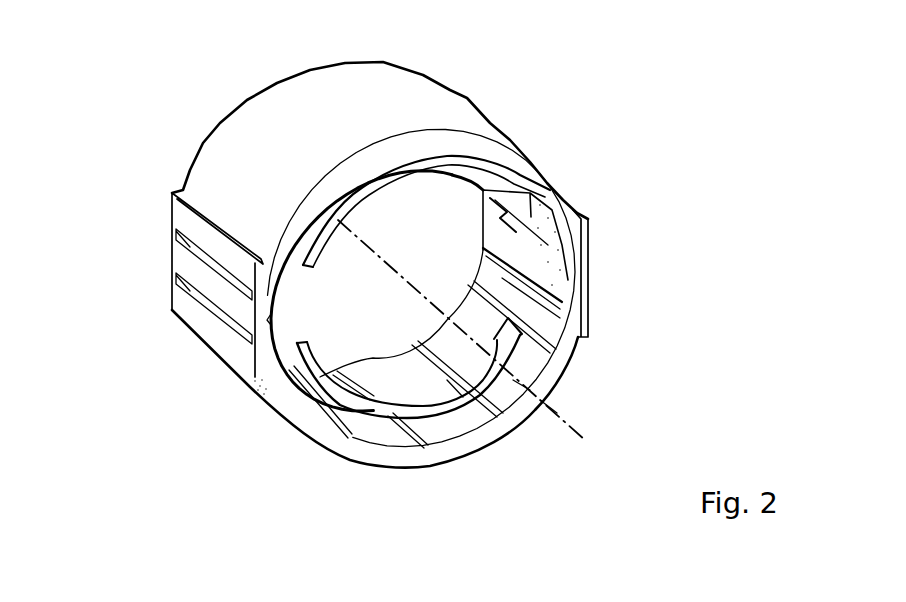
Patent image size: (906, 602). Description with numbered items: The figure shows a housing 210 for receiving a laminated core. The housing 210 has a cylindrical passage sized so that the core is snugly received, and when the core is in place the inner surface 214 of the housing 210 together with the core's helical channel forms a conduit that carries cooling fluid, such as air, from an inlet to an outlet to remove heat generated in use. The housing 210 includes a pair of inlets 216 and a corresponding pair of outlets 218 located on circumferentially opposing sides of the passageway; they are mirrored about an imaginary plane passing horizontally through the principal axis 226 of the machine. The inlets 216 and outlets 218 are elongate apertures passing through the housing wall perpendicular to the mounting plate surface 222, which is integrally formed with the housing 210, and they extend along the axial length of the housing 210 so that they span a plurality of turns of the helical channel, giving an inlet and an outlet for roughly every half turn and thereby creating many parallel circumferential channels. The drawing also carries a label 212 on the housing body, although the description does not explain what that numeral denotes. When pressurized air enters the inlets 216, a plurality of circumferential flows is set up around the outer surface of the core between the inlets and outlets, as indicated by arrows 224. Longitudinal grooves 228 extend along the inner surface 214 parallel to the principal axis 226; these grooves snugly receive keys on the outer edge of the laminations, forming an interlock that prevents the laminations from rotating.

The housing 210 is at (593, 88).
The housing body 212 is at (522, 304).
The inner surface of the housing 214 is at (380, 433).
The inlets 216 is at (190, 292).
The outlets 218 is at (483, 240).
The mounting plate surface 222 is at (192, 313).
The arrows 224 is at (415, 168).
The principal axis 226 is at (560, 420).
The longitudinal grooves 228 is at (417, 343).